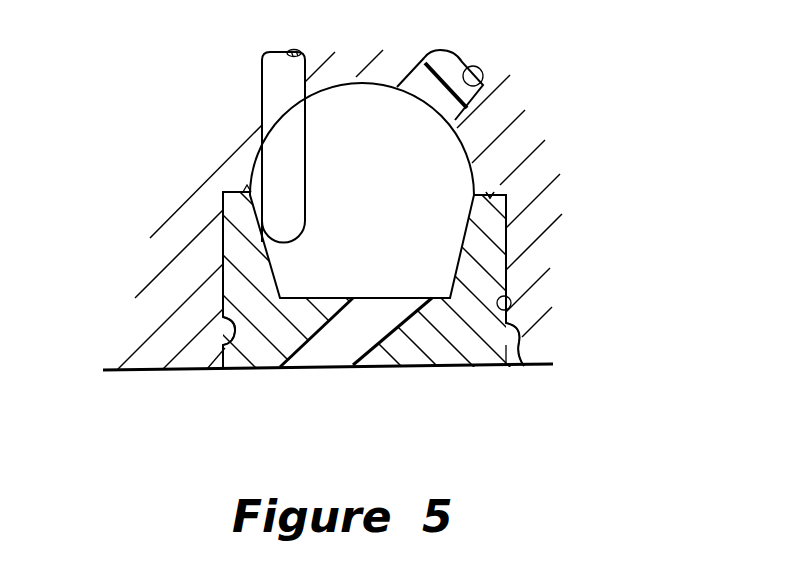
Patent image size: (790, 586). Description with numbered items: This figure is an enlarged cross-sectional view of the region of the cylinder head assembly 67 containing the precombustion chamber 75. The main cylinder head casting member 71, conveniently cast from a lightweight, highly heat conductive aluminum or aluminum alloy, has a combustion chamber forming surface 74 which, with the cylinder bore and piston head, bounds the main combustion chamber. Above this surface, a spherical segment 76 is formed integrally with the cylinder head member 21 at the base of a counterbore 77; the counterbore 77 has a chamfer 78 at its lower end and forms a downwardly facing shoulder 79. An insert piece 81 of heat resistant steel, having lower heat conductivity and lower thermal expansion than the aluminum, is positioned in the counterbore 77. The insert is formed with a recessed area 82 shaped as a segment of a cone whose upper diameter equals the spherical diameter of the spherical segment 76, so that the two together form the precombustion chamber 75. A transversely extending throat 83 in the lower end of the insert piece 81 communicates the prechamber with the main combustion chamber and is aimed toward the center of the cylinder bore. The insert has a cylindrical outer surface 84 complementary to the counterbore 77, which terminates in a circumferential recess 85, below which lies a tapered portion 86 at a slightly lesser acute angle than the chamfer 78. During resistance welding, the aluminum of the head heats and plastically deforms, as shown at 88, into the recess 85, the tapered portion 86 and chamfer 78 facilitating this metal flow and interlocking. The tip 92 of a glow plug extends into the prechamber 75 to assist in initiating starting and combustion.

The cylinder head member 21 is at (480, 77).
The cylinder head assembly 67 is at (215, 138).
The main cylinder head casting member 71 is at (590, 200).
The combustion chamber forming surface 74 is at (122, 372).
The precombustion chamber 75 is at (383, 98).
The spherical segment 76 is at (478, 225).
The counterbore 77 is at (270, 345).
The chamfer 78 is at (500, 360).
The shoulder 79 is at (492, 192).
The insert piece 81 is at (442, 378).
The recessed area 82 is at (280, 277).
The throat 83 is at (328, 353).
The cylindrical outer surface 84 is at (223, 283).
The circumferential recess 85 is at (525, 337).
The tapered portion 86 is at (233, 372).
The plastically deformed aluminum 88 is at (520, 332).
The glow plug tip 92 is at (280, 78).